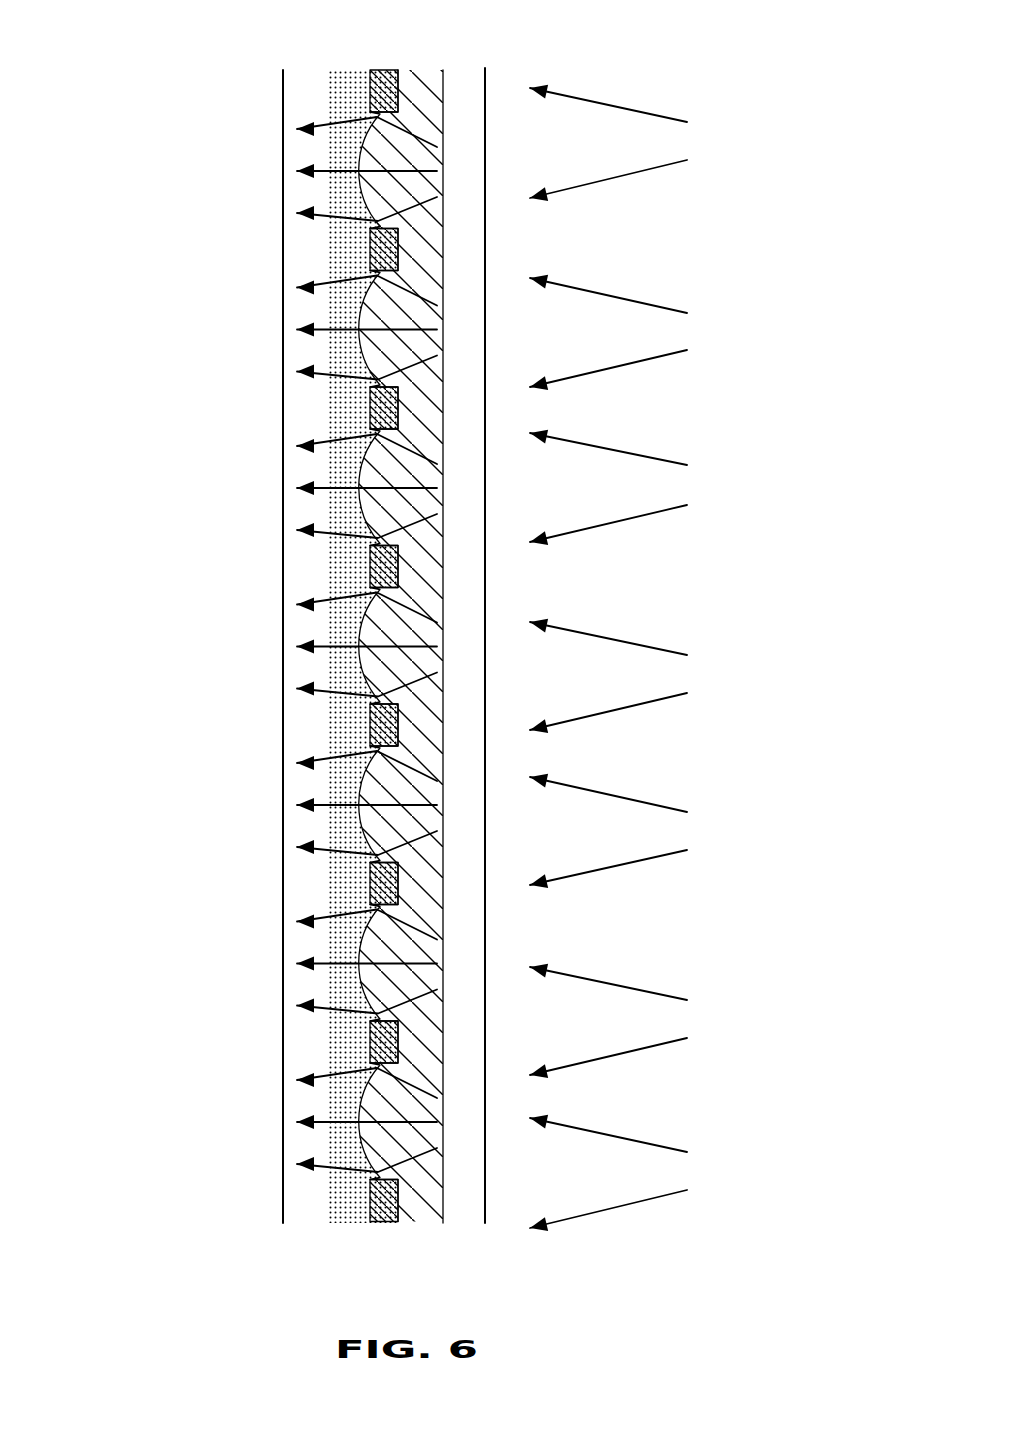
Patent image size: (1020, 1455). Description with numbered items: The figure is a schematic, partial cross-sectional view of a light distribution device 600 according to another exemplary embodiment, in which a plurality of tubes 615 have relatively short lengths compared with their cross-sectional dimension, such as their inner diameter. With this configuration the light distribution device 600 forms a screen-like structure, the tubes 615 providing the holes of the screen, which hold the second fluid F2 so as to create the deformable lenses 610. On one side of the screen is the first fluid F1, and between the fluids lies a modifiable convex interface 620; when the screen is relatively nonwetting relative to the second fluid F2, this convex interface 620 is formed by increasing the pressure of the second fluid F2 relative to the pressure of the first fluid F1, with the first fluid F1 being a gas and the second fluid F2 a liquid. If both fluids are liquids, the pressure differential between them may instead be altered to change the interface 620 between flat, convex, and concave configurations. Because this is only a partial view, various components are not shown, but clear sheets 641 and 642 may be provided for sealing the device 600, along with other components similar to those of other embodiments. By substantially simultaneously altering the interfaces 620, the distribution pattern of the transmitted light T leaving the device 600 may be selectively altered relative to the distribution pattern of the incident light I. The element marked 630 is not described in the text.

The light distribution device 600 is at (190, 137).
The deformable lenses 610 is at (330, 985).
The tubes 615 is at (372, 68).
The modifiable convex interface 620 is at (330, 306).
The substrate layer 630 is at (330, 410).
The clear sheet 641 is at (283, 556).
The clear sheet 642 is at (485, 485).
The first fluid F1 is at (347, 713).
The second fluid F2 is at (412, 623).
The transmitted light T is at (318, 759).
The incident light I is at (612, 792).